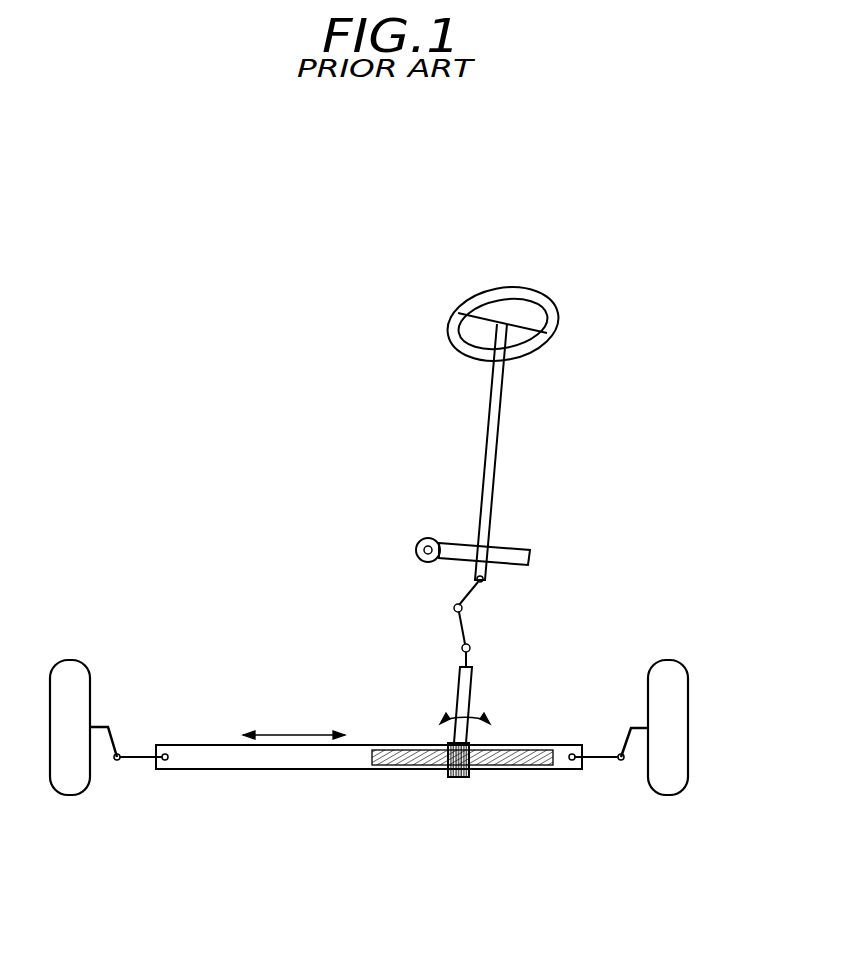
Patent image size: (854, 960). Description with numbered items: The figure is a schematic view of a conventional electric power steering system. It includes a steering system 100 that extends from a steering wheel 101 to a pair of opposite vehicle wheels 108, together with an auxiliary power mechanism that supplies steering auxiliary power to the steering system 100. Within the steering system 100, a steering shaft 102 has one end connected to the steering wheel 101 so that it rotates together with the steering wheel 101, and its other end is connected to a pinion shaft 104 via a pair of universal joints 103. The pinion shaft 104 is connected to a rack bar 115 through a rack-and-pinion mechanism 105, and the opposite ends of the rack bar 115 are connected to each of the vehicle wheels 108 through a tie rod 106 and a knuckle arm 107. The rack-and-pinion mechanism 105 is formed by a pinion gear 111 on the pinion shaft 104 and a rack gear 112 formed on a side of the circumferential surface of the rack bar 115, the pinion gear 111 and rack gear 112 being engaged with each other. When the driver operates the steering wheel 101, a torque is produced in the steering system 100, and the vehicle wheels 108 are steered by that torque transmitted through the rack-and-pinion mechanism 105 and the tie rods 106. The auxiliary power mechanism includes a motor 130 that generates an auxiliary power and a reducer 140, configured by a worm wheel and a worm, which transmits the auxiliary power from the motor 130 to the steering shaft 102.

The steering system 100 is at (275, 302).
The steering wheel 101 is at (452, 313).
The steering shaft 102 is at (503, 414).
The universal joints 103 is at (470, 600).
The pinion shaft 104 is at (457, 691).
The rack-and-pinion mechanism 105 is at (501, 843).
The tie rod 106 is at (607, 753).
The knuckle arm 107 is at (102, 725).
The vehicle wheels 108 is at (678, 670).
The pinion gear 111 is at (452, 778).
The rack gear 112 is at (512, 764).
The rack bar 115 is at (250, 768).
The motor 130 is at (430, 538).
The reducer 140 is at (511, 545).